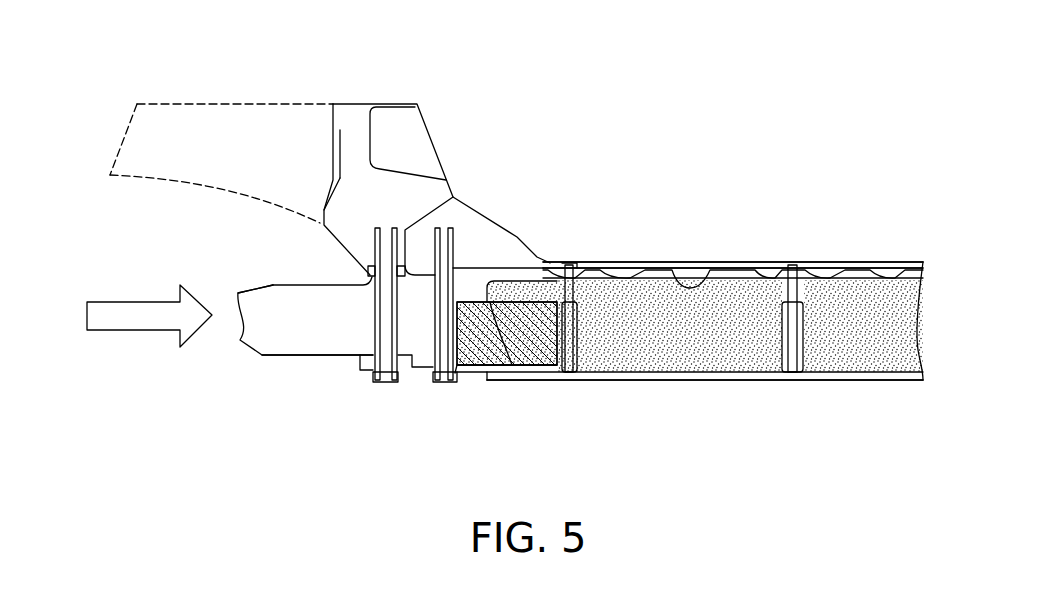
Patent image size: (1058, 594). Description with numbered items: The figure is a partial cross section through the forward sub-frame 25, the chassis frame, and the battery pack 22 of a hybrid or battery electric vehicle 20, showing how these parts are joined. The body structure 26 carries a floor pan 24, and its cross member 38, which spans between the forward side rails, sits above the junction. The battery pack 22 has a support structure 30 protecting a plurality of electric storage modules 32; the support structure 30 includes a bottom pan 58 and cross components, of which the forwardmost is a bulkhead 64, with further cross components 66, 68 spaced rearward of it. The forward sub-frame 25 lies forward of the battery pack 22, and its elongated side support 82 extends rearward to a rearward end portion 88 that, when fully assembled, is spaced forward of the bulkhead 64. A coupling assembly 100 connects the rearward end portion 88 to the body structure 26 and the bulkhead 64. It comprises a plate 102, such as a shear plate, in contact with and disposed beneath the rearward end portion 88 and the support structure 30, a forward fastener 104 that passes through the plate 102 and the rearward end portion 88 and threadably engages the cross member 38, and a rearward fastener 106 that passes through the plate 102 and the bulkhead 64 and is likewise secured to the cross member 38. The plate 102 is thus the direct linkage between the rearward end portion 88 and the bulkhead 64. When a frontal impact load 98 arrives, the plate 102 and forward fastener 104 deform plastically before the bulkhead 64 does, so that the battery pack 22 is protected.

The vehicle 20 is at (758, 90).
The battery pack 22 is at (711, 395).
The floor pan 24 is at (710, 277).
The forward sub-frame 25 is at (272, 378).
The body structure 26 is at (316, 232).
The support structure 30 is at (785, 400).
The electric storage module 32 is at (885, 347).
The cross member 38 is at (423, 187).
The bottom pan 58 is at (653, 383).
The bulkhead 64 is at (472, 353).
The cross component 66 is at (580, 350).
The cross component 68 is at (803, 350).
The side support 82 is at (258, 288).
The rearward end portion 88 is at (303, 358).
The frontal impact load 98 is at (157, 332).
The coupling assembly 100 is at (410, 392).
The plate 102 is at (345, 368).
The forward fastener 104 is at (387, 383).
The rearward fastener 106 is at (437, 383).